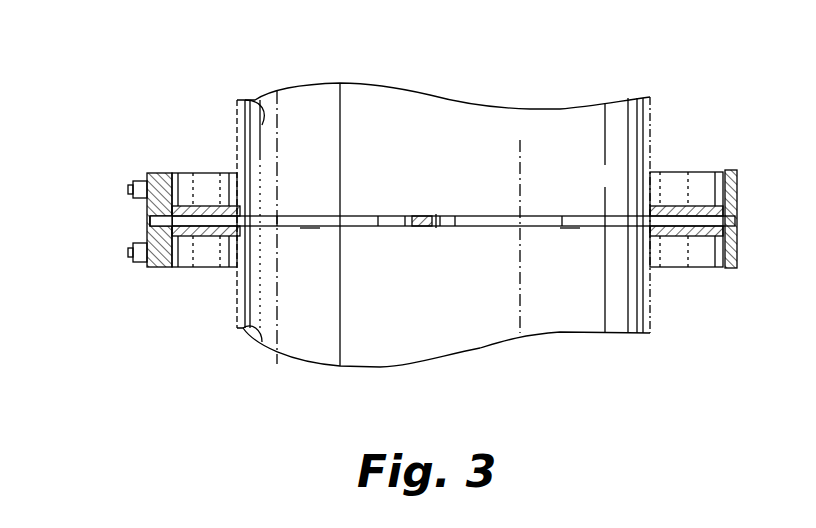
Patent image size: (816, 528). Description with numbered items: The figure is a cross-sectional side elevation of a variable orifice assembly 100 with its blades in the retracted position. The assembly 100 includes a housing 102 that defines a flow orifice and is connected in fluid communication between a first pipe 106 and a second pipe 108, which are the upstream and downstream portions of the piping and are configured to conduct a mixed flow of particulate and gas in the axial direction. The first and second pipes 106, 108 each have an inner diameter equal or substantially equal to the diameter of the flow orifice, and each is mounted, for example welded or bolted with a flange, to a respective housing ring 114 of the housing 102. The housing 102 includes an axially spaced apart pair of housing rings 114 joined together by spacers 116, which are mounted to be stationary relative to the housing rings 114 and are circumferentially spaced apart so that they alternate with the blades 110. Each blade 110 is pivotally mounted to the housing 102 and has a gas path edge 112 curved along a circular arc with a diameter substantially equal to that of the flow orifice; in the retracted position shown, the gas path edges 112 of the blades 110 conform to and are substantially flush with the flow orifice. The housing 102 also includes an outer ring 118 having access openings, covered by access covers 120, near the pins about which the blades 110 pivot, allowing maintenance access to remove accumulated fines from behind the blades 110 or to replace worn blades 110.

The variable orifice assembly 100 is at (133, 68).
The housing 102 is at (187, 162).
The first pipe 106 is at (250, 132).
The second pipe 108 is at (243, 318).
The blade 110 is at (378, 230).
The gas path edge 112 is at (307, 232).
The housing ring 114 is at (218, 172).
The spacer 116 is at (421, 214).
The outer ring 118 is at (163, 268).
The access cover 120 is at (150, 228).